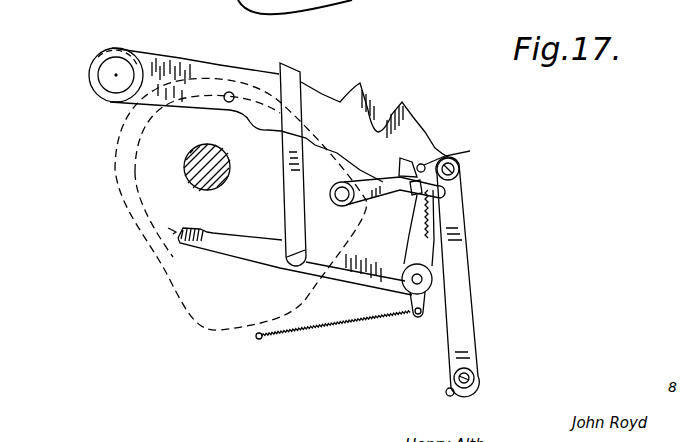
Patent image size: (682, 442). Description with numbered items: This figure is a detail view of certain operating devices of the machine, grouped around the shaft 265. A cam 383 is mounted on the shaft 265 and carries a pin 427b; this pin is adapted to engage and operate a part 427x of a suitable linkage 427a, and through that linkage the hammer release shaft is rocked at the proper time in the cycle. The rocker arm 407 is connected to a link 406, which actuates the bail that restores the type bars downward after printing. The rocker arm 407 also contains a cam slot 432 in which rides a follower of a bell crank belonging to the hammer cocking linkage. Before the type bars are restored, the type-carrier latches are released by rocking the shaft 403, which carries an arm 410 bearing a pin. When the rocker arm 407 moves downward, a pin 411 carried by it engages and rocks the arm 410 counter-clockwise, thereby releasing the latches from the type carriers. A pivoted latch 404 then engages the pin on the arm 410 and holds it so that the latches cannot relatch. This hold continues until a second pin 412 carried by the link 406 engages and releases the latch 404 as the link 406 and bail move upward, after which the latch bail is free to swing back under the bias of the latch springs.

The linkage 427a is at (302, 76).
The pin 427b is at (229, 92).
The part 427x is at (228, 246).
The cam slot 432 is at (393, 100).
The rocker arm 407 is at (418, 121).
The pin 411 is at (503, 151).
The pivoted latch 404 is at (382, 197).
The arm 410 is at (427, 247).
The link 406 is at (468, 262).
The shaft 403 is at (424, 279).
The second pin 412 is at (446, 390).
The shaft 265 is at (187, 167).
The cam 383 is at (211, 326).